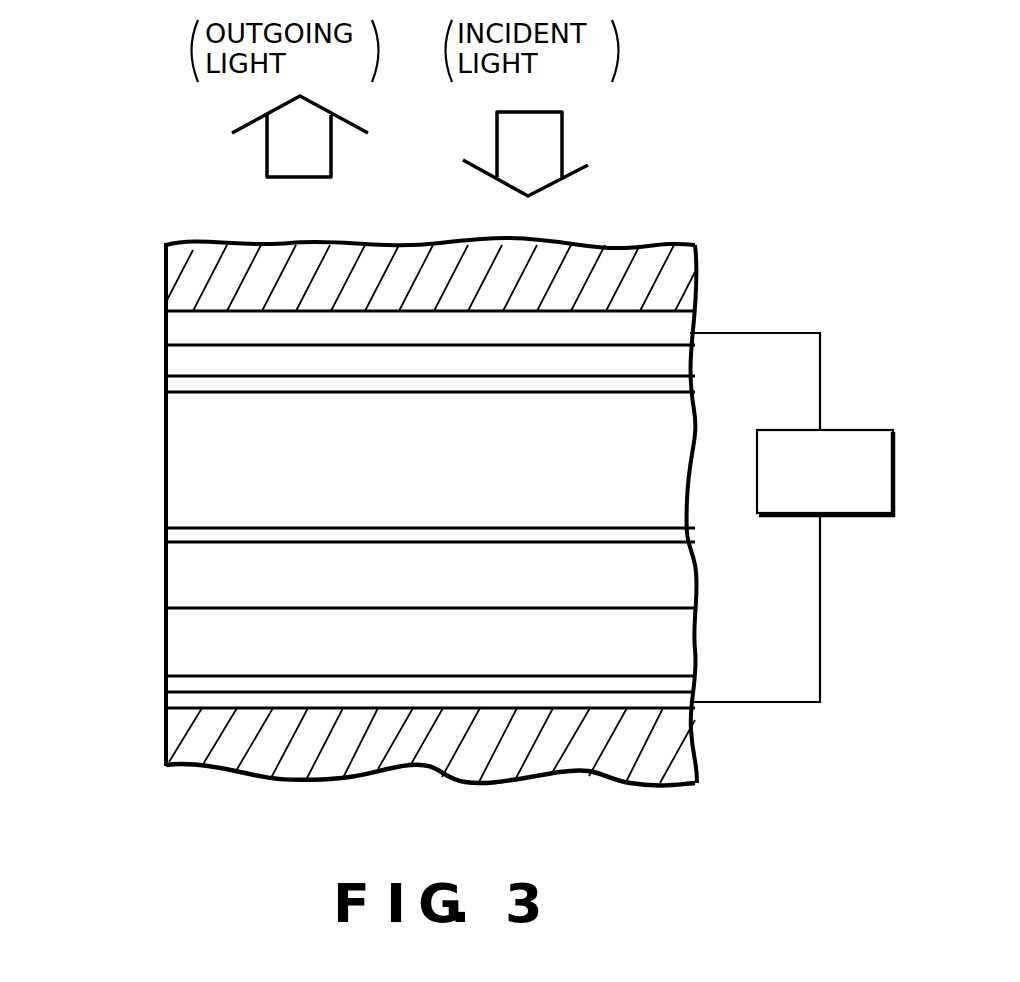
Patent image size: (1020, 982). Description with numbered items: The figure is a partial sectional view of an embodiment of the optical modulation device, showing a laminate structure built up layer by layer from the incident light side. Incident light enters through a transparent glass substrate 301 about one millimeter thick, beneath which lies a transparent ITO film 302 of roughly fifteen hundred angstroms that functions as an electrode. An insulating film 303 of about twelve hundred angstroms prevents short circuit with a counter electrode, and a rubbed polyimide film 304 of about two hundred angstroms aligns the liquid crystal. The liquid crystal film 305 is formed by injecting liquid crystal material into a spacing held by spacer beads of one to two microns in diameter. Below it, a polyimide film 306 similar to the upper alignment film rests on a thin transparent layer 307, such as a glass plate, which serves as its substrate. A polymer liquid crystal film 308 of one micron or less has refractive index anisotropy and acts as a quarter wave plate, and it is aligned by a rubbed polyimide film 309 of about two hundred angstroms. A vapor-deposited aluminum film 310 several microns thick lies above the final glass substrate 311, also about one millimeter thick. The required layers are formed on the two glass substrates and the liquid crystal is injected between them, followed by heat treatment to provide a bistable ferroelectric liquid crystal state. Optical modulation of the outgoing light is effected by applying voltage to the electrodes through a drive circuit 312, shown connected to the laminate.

The transparent glass substrate 301 is at (166, 277).
The transparent ITO film 302 is at (166, 328).
The insulating film 303 is at (166, 361).
The rubbed polyimide film 304 is at (166, 393).
The liquid crystal film 305 is at (166, 477).
The polyimide film 306 is at (166, 532).
The thin transparent layer 307 is at (166, 572).
The polymer liquid crystal film 308 is at (166, 637).
The rubbed polyimide film 309 is at (166, 680).
The vapor-deposited aluminum film 310 is at (166, 700).
The glass substrate 311 is at (166, 750).
The drive circuit 312 is at (845, 513).